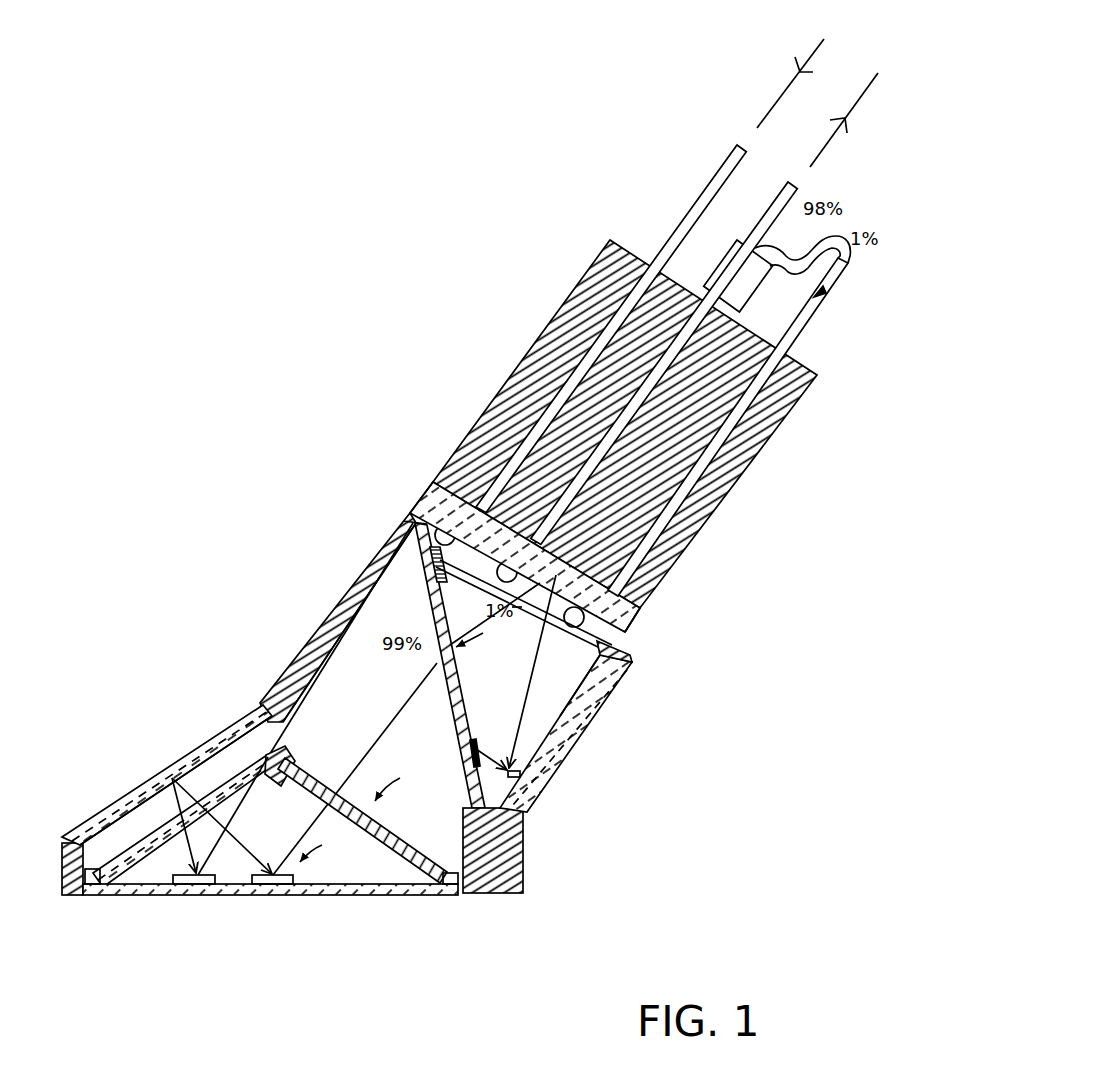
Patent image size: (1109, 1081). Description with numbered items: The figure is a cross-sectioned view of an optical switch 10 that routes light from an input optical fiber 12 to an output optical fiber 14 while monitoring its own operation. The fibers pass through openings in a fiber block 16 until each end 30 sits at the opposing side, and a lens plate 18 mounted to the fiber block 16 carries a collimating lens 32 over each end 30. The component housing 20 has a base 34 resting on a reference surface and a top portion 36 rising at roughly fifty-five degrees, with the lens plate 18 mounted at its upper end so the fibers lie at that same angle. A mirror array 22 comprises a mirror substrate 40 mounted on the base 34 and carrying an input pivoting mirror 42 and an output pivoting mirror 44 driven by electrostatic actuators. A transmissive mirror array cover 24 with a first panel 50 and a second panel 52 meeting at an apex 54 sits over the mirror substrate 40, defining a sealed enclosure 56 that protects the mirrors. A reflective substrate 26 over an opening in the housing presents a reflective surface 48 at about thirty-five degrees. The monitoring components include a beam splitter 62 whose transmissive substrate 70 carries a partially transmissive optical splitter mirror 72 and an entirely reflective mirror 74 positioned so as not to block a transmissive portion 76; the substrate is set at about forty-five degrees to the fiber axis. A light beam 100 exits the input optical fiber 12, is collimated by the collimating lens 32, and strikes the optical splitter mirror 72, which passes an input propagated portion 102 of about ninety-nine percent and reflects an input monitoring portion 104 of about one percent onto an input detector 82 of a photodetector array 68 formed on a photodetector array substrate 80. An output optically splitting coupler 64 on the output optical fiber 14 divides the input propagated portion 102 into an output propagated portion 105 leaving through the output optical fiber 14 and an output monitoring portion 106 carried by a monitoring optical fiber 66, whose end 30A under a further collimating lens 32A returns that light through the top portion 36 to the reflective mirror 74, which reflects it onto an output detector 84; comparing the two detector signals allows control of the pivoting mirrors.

The optical switch 10 is at (366, 300).
The input optical fiber 12 is at (702, 201).
The output optical fiber 14 is at (767, 213).
The fiber block 16 is at (499, 393).
The lens plate 18 is at (422, 492).
The component housing 20 is at (340, 612).
The mirror array 22 is at (324, 847).
The transmissive mirror array cover 24 is at (401, 782).
The reflective substrate 26 is at (190, 749).
The end of optical fiber 30 is at (486, 498).
The end of monitoring optical fiber 30A is at (650, 600).
The collimating lens 32 is at (500, 578).
The collimating lens over monitoring fiber end 32A is at (630, 652).
The base 34 is at (525, 862).
The top portion 36 is at (375, 553).
The mirror substrate 40 is at (345, 884).
The input pivoting mirror 42 is at (210, 885).
The output pivoting mirror 44 is at (290, 885).
The reflective surface 48 is at (228, 746).
The first panel 50 is at (310, 785).
The second panel 52 is at (233, 784).
The apex 54 is at (283, 752).
The enclosure 56 is at (288, 839).
The beam splitter 62 is at (410, 521).
The output optically splitting coupler 64 is at (757, 294).
The monitoring optical fiber 66 is at (806, 320).
The photodetector array 68 is at (602, 720).
The transmissive substrate 70 is at (460, 671).
The optical splitter mirror 72 is at (445, 585).
The reflective mirror 74 is at (476, 738).
The transmissive portion 76 is at (483, 636).
The photodetector array substrate 80 is at (616, 686).
The input detector 82 is at (598, 664).
The output detector 84 is at (516, 769).
The light beam 100 is at (779, 78).
The input propagated portion 102 is at (345, 663).
The input monitoring portion 104 is at (523, 600).
The output propagated portion 105 is at (844, 120).
The output monitoring portion 106 is at (828, 288).